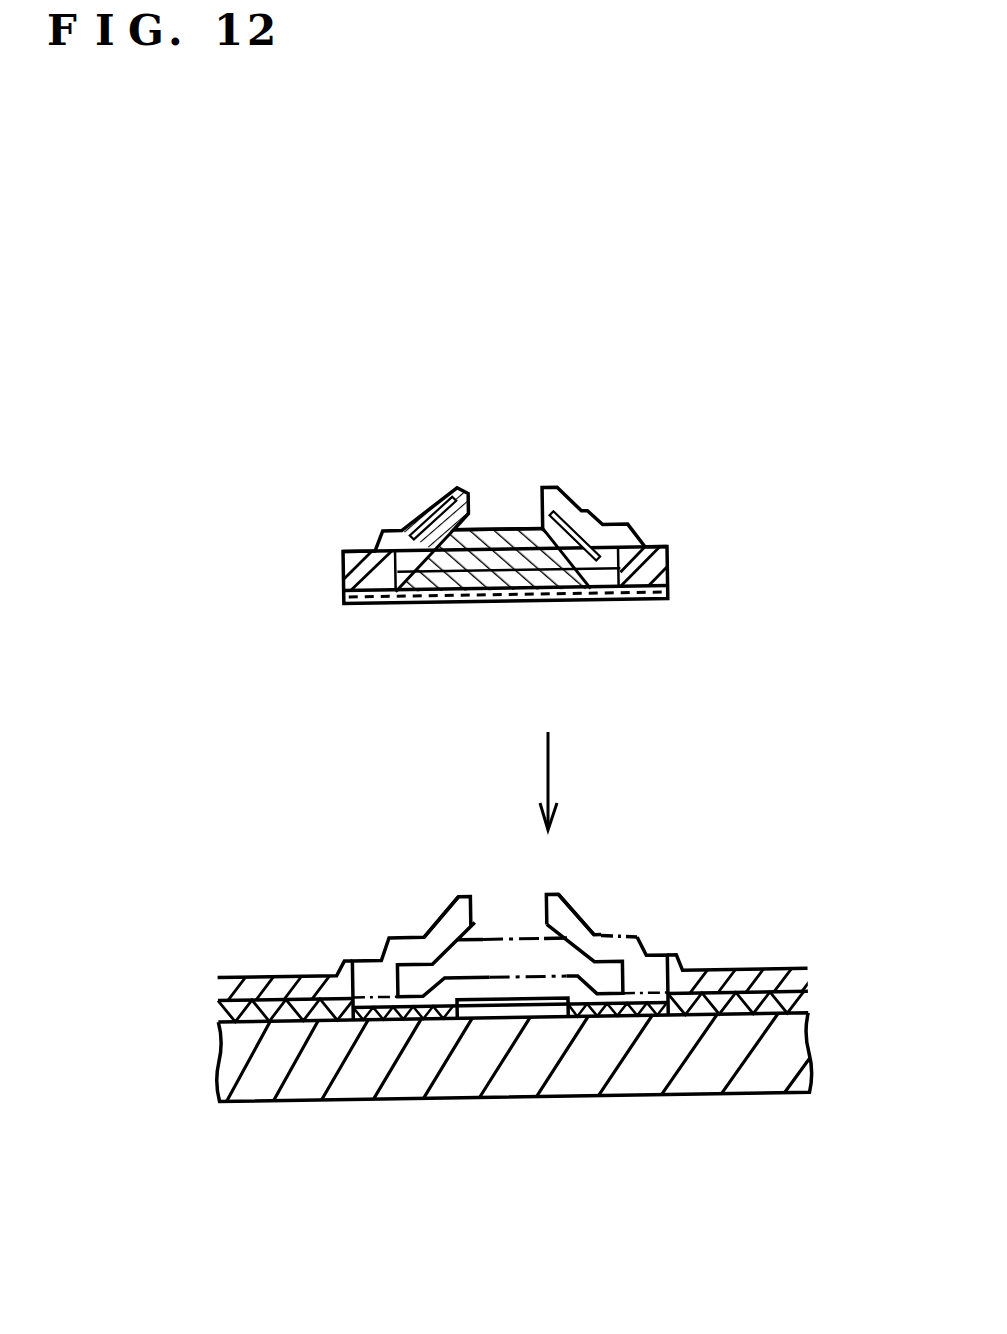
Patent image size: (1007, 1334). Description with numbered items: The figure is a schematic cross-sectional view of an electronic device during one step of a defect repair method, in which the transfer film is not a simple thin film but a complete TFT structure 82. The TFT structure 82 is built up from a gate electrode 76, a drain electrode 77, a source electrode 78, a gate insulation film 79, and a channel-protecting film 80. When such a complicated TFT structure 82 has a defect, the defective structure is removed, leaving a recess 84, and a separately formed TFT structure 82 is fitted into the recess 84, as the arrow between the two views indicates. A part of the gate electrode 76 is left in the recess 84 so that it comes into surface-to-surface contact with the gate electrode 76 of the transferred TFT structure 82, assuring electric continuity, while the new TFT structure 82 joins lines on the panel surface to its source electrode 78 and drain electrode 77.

The gate electrode 76 is at (535, 598).
The drain electrode 77 is at (572, 518).
The source electrode 78 is at (428, 518).
The gate insulation film 79 is at (433, 600).
The channel-protecting film 80 is at (505, 528).
The TFT structure 82 is at (662, 501).
The recess 84 is at (356, 985).